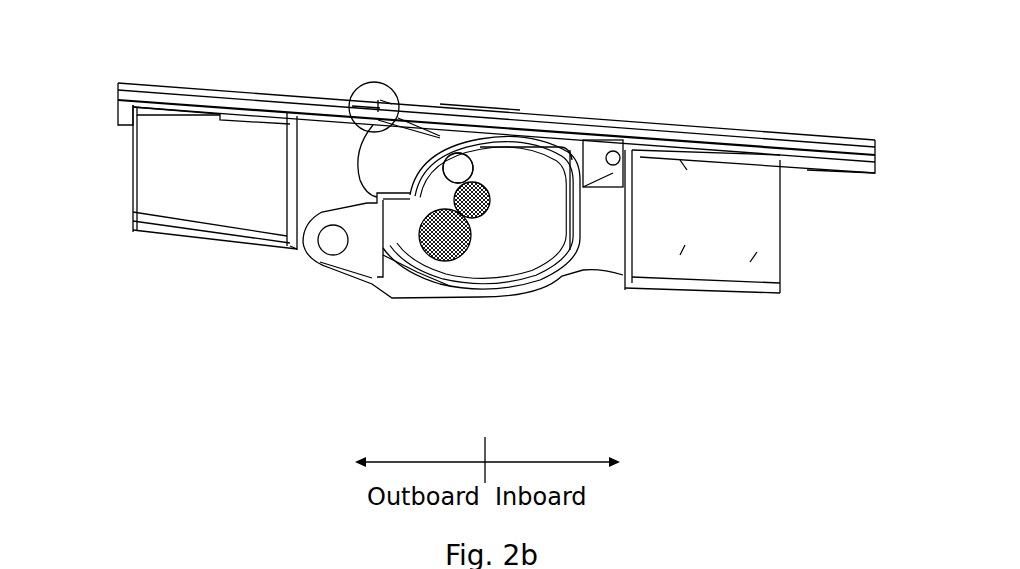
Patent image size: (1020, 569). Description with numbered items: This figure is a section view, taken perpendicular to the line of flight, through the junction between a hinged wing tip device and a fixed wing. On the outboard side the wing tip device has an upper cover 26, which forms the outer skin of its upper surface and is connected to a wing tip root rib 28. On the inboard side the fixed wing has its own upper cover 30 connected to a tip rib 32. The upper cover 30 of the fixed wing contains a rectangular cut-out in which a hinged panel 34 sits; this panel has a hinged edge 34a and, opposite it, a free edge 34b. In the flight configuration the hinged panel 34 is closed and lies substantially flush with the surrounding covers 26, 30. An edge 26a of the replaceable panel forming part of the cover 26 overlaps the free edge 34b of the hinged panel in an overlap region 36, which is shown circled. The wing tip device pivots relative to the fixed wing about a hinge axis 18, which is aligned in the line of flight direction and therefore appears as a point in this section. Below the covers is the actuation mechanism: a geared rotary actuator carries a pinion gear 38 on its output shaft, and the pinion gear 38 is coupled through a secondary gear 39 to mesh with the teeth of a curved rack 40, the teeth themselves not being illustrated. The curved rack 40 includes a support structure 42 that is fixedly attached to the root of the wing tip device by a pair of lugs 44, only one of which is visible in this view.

The hinge axis 18 is at (457, 170).
The upper cover 26 is at (178, 100).
The edge 26a is at (352, 107).
The wing tip root rib 28 is at (290, 246).
The upper cover 30 is at (745, 112).
The tip rib 32 is at (623, 233).
The hinged panel 34 is at (416, 98).
The hinged edge 34a is at (446, 98).
The free edge 34b is at (388, 96).
The overlap region 36 is at (372, 100).
The pinion gear 38 is at (477, 213).
The secondary gear 39 is at (440, 233).
The curved rack 40 is at (553, 203).
The support structure 42 is at (415, 270).
The lug 44 is at (343, 263).